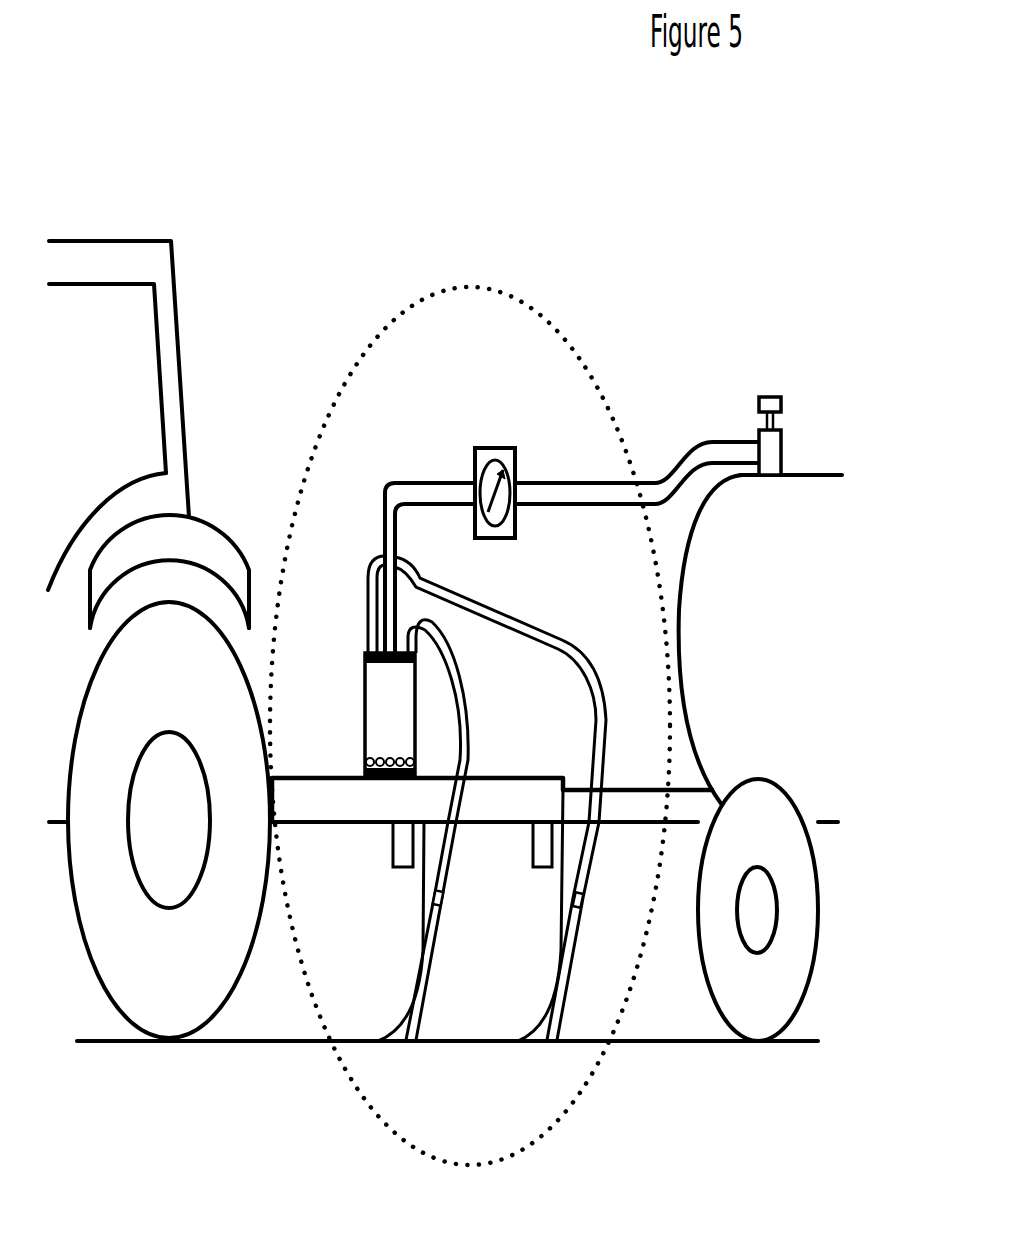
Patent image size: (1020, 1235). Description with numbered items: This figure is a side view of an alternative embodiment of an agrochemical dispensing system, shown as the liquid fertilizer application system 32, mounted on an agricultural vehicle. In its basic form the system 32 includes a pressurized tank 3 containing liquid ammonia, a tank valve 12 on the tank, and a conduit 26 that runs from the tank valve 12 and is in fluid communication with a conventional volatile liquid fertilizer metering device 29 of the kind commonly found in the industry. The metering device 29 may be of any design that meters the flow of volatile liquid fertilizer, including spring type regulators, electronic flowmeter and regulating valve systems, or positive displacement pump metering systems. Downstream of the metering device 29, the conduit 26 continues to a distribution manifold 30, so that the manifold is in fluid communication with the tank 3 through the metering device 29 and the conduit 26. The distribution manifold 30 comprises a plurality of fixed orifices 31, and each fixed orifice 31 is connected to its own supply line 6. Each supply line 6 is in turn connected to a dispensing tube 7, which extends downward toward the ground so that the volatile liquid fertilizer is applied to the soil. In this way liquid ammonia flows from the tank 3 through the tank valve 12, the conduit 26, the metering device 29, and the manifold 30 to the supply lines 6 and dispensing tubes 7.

The pressurized tank 3 is at (806, 474).
The supply line 6 is at (463, 715).
The dispensing tube 7 is at (428, 995).
The tank valve 12 is at (770, 397).
The conduit 26 is at (433, 483).
The volatile liquid fertilizer metering device 29 is at (494, 448).
The distribution manifold 30 is at (364, 668).
The fixed orifices 31 is at (380, 755).
The system 32 is at (362, 360).